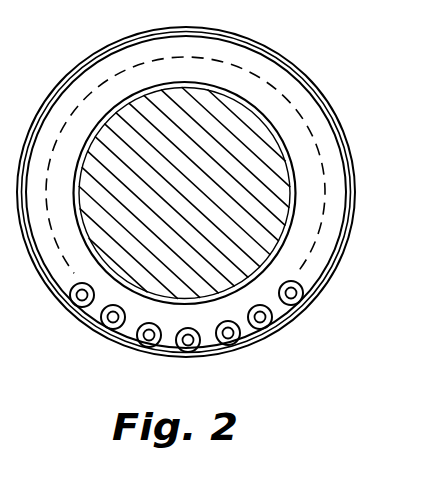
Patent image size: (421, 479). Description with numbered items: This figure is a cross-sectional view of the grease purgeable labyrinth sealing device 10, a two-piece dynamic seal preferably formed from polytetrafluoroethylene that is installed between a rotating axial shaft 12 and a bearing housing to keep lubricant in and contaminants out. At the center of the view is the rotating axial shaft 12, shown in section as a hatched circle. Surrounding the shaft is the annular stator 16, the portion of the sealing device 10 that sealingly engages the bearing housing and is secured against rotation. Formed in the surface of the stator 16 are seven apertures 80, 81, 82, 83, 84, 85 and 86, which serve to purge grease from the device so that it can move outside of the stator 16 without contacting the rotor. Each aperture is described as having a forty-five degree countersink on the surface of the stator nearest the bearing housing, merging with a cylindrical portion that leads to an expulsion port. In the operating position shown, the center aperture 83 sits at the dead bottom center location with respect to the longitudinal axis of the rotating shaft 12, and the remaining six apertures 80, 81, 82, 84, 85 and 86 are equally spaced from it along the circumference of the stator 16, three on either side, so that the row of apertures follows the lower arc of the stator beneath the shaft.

The sealing device 10 is at (309, 66).
The rotating axial shaft 12 is at (217, 148).
The annular stator 16 is at (302, 115).
The aperture 80 is at (82, 299).
The aperture 81 is at (112, 321).
The aperture 82 is at (149, 340).
The center aperture 83 is at (189, 347).
The aperture 84 is at (230, 343).
The aperture 85 is at (268, 326).
The aperture 86 is at (300, 296).